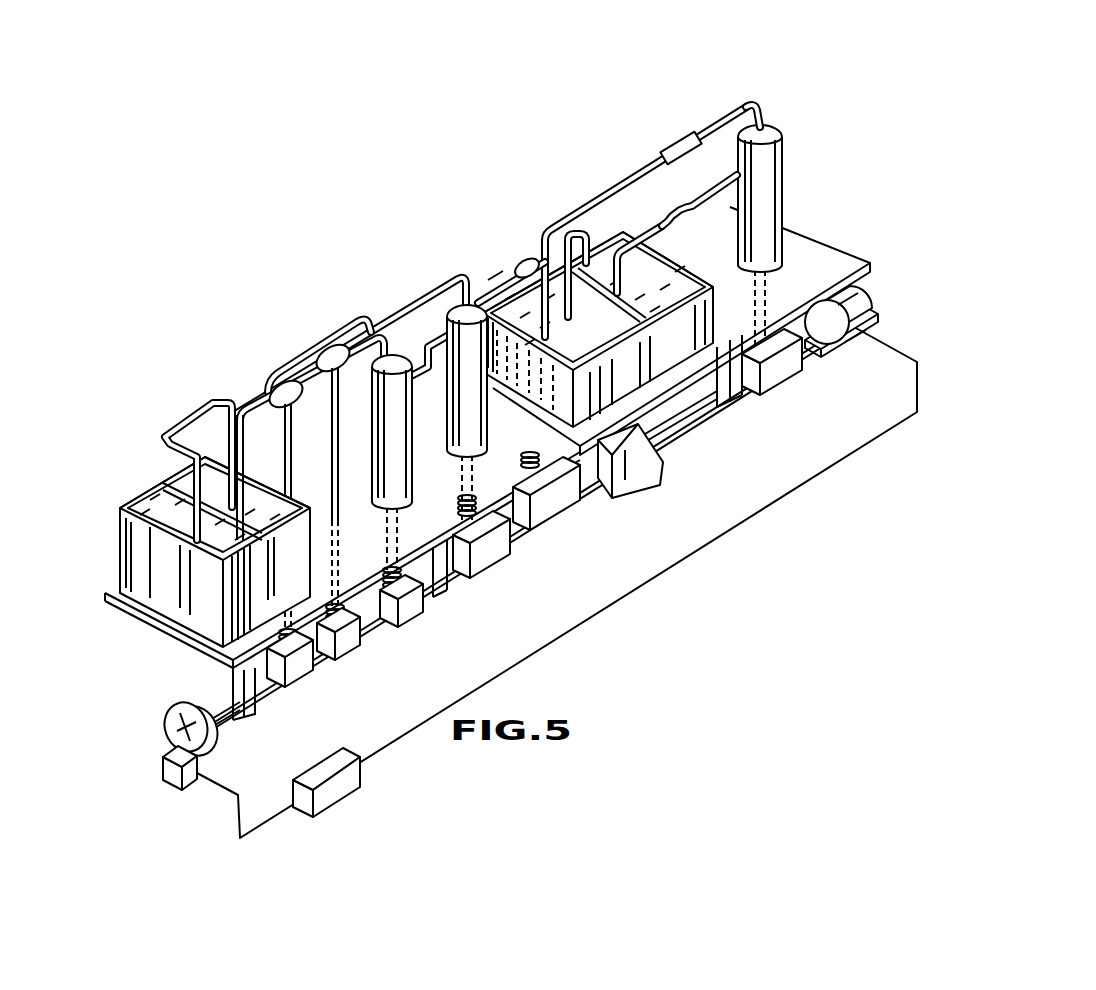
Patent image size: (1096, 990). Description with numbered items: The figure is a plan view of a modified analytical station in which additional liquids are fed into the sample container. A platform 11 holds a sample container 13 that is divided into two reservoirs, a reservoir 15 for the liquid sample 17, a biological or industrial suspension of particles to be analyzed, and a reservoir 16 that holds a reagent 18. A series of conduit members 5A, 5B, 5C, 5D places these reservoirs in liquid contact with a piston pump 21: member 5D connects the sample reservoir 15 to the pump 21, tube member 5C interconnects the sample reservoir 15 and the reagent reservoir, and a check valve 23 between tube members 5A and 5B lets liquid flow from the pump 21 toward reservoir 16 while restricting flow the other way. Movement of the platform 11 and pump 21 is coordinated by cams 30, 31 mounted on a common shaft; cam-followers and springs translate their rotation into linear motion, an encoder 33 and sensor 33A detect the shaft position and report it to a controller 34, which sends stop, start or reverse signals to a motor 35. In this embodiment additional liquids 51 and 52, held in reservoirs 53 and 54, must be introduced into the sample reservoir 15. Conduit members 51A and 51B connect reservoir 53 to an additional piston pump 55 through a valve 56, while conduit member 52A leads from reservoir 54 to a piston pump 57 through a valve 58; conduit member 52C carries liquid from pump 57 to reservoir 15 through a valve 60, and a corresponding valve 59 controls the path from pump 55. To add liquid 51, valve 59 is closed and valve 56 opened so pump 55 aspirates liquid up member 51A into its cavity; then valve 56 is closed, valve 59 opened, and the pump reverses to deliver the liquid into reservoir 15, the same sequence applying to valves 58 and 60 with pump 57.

The conduit member 5A is at (752, 100).
The conduit member 5B is at (622, 192).
The tube member 5C is at (674, 224).
The conduit member 5D is at (676, 210).
The platform 11 is at (597, 448).
The sample container 13 is at (610, 323).
The reservoir 15 is at (680, 283).
The reservoir 16 is at (515, 256).
The liquid sample 17 is at (655, 330).
The reagent 18 is at (603, 345).
The piston pump 21 is at (783, 178).
The check valve 23 is at (675, 130).
The cam 30 is at (658, 482).
The cam 31 is at (802, 372).
The encoder 33 is at (172, 712).
The sensor 33A is at (172, 785).
The controller 34 is at (340, 795).
The motor 35 is at (862, 322).
The additional liquid 51 is at (167, 503).
The conduit member 51A is at (195, 415).
The conduit member 51B is at (357, 312).
The additional liquid 52 is at (210, 462).
The conduit member 52A is at (440, 290).
The conduit member 52C is at (575, 230).
The reservoir 53 is at (181, 521).
The reservoir 54 is at (258, 493).
The piston pump 55 is at (420, 505).
The valve 56 is at (282, 384).
The piston pump 57 is at (537, 522).
The valve 58 is at (328, 348).
The valve 59 is at (489, 268).
The valve 60 is at (527, 258).